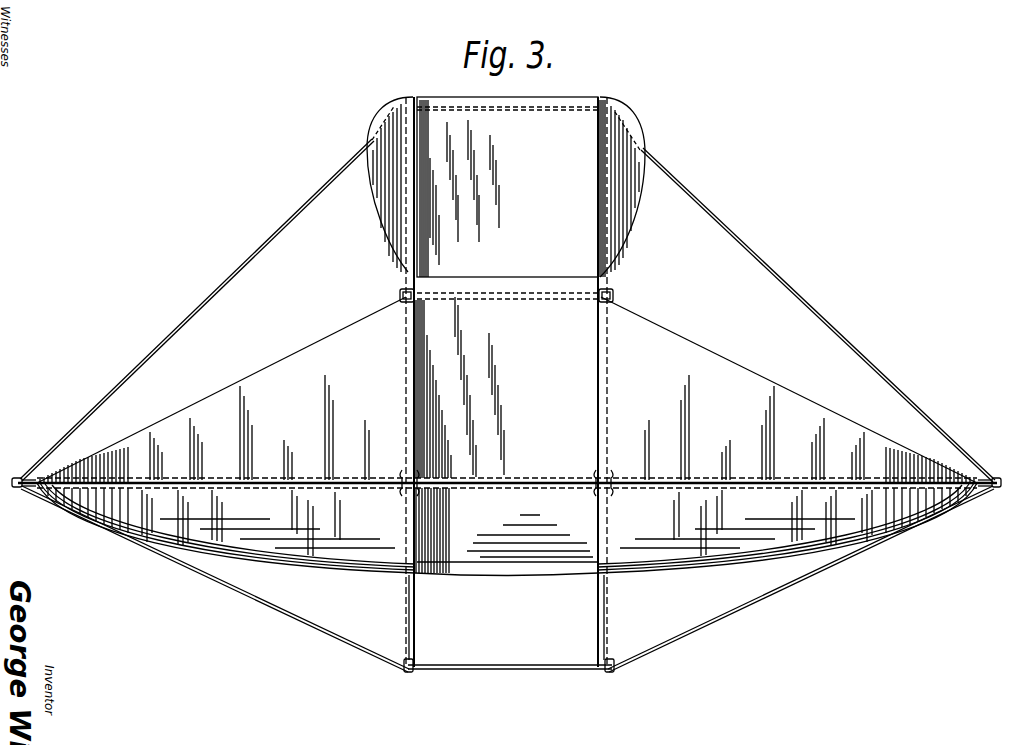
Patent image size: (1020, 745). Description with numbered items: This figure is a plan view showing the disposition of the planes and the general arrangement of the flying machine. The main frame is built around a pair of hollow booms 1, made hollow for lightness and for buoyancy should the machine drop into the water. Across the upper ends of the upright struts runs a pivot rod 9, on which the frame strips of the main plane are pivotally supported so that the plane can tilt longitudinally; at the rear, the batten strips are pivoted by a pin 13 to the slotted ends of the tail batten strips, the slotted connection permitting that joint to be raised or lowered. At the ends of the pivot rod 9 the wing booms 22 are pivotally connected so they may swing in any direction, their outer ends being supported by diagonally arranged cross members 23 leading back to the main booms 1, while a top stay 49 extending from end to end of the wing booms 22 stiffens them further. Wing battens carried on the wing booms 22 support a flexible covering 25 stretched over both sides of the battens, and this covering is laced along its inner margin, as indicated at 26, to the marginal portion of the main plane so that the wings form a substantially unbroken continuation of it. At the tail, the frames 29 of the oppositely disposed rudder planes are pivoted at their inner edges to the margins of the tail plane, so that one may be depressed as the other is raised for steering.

The boom 1 is at (400, 294).
The pivot rod 9 is at (540, 480).
The pin 13 is at (538, 298).
The wing boom 22 is at (346, 492).
The cross member 23 is at (141, 357).
The covering 25 is at (507, 390).
The lacing 26 is at (412, 413).
The rudder plane frame 29 is at (395, 210).
The top stay 49 is at (513, 493).